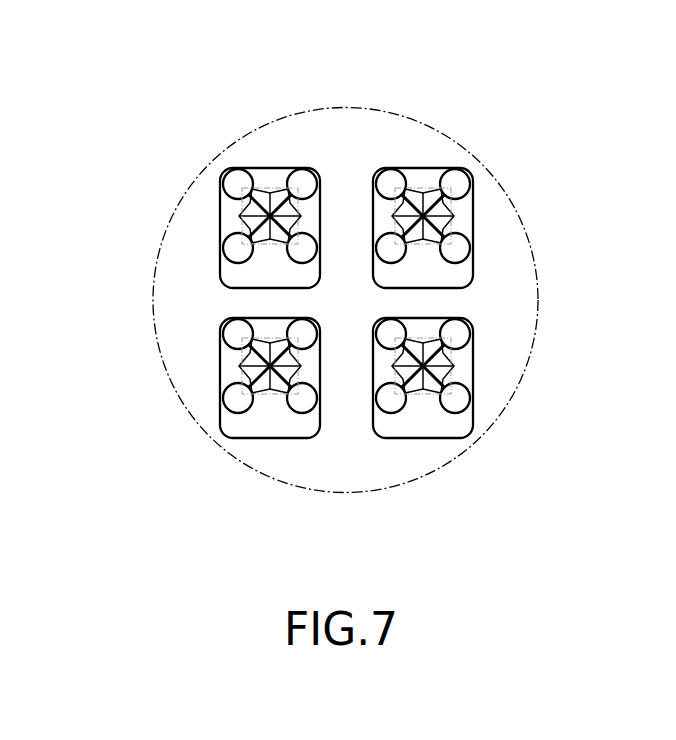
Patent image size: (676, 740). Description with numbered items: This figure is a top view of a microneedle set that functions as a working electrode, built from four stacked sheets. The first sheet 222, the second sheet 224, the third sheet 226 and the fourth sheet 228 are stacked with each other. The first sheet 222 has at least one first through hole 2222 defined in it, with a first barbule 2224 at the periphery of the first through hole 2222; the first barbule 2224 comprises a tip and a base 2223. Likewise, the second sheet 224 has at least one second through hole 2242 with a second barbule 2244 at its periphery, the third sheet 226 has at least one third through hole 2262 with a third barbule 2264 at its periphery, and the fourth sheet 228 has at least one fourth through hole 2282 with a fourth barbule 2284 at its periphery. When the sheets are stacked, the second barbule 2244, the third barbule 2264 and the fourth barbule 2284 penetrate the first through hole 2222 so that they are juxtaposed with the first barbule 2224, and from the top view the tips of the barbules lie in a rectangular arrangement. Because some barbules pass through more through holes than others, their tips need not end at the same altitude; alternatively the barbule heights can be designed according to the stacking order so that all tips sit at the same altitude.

The first sheet 222 is at (430, 157).
The first through hole 2222 is at (375, 200).
The base 2223 is at (418, 182).
The first barbule 2224 is at (403, 193).
The second sheet 224 is at (465, 210).
The second through hole 2242 is at (436, 232).
The second barbule 2244 is at (464, 210).
The third sheet 226 is at (425, 268).
The third through hole 2262 is at (420, 270).
The third barbule 2264 is at (445, 245).
The fourth sheet 228 is at (382, 218).
The fourth through hole 2282 is at (380, 232).
The fourth barbule 2284 is at (395, 240).